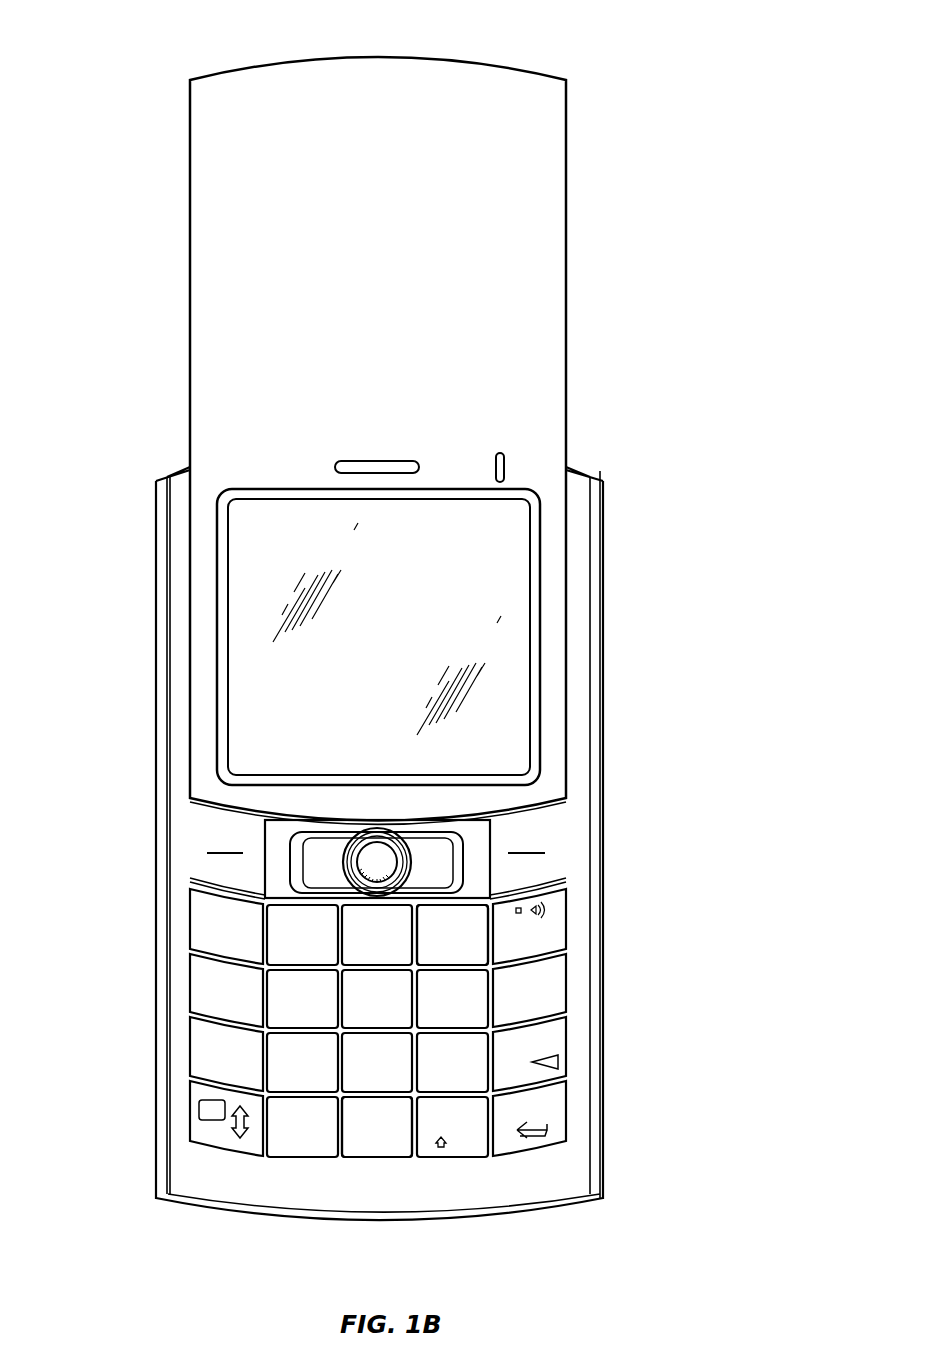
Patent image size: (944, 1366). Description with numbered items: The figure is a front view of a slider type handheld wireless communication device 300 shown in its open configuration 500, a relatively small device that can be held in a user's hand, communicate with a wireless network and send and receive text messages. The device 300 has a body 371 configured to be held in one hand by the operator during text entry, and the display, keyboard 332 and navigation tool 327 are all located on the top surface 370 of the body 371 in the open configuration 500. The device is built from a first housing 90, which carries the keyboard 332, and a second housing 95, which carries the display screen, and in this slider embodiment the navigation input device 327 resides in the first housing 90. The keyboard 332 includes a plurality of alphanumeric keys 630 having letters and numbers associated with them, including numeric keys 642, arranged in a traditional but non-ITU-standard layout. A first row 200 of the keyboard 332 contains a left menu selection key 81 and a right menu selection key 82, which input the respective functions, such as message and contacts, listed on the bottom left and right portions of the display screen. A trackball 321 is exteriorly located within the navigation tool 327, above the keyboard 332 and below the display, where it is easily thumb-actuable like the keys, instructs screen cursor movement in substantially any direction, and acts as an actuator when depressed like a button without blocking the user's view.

The open configuration 500 is at (122, 56).
The handheld wireless communication device 300 is at (398, 26).
The second housing 95 is at (534, 144).
The body 371 is at (534, 191).
The top surface 370 is at (553, 693).
The left menu selection key 81 is at (216, 835).
The right menu selection key 82 is at (529, 838).
The first row 200 is at (189, 863).
The navigation tool 327 is at (342, 876).
The trackball 321 is at (406, 883).
The alphanumeric keys 630 is at (473, 944).
The keyboard 332 is at (327, 1173).
The numeric keys 642 is at (393, 1123).
The first housing 90 is at (532, 1238).